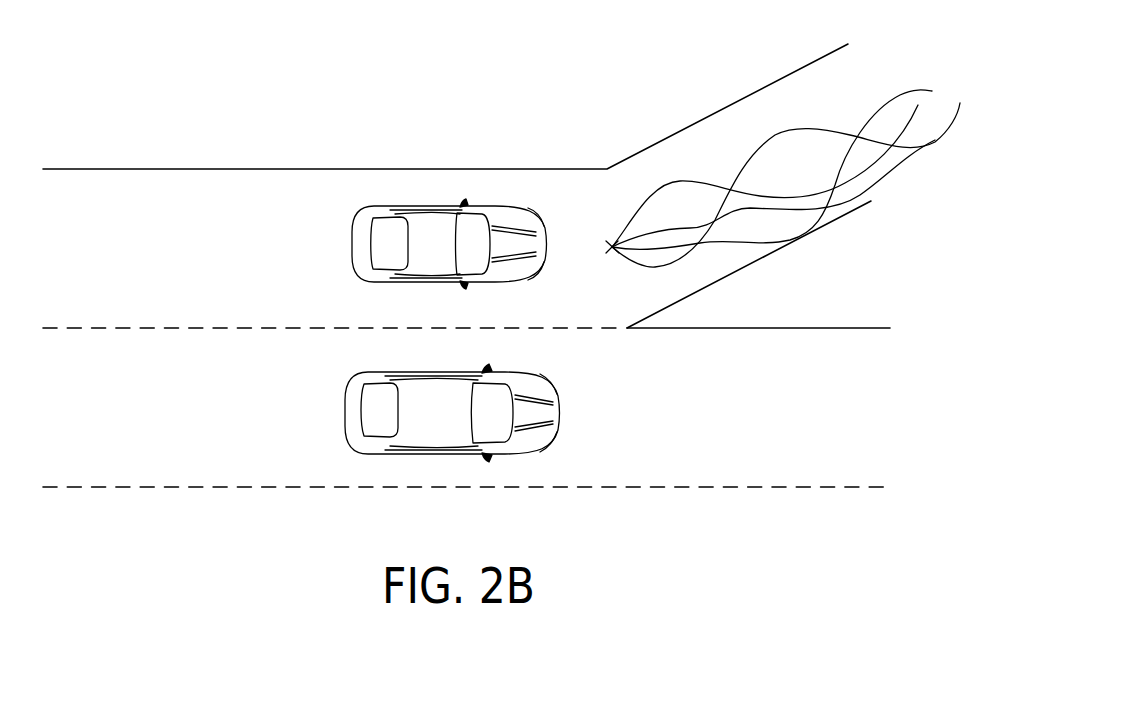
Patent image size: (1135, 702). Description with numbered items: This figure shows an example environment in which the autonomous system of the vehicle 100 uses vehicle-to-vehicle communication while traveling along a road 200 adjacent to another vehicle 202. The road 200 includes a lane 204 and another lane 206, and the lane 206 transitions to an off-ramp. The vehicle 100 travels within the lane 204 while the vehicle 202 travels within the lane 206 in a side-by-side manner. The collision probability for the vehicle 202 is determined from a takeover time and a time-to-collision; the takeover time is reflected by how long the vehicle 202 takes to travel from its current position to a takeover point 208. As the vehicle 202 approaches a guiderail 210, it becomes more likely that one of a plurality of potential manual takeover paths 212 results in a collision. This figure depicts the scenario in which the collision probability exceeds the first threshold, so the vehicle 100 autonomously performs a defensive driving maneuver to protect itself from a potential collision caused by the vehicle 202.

The vehicle 100 is at (345, 413).
The road 200 is at (175, 169).
The vehicle 202 is at (352, 243).
The lane 204 is at (668, 459).
The lane 206 is at (618, 299).
The takeover point 208 is at (612, 247).
The guiderail 210 is at (628, 330).
The potential manual takeover paths 212 is at (685, 173).